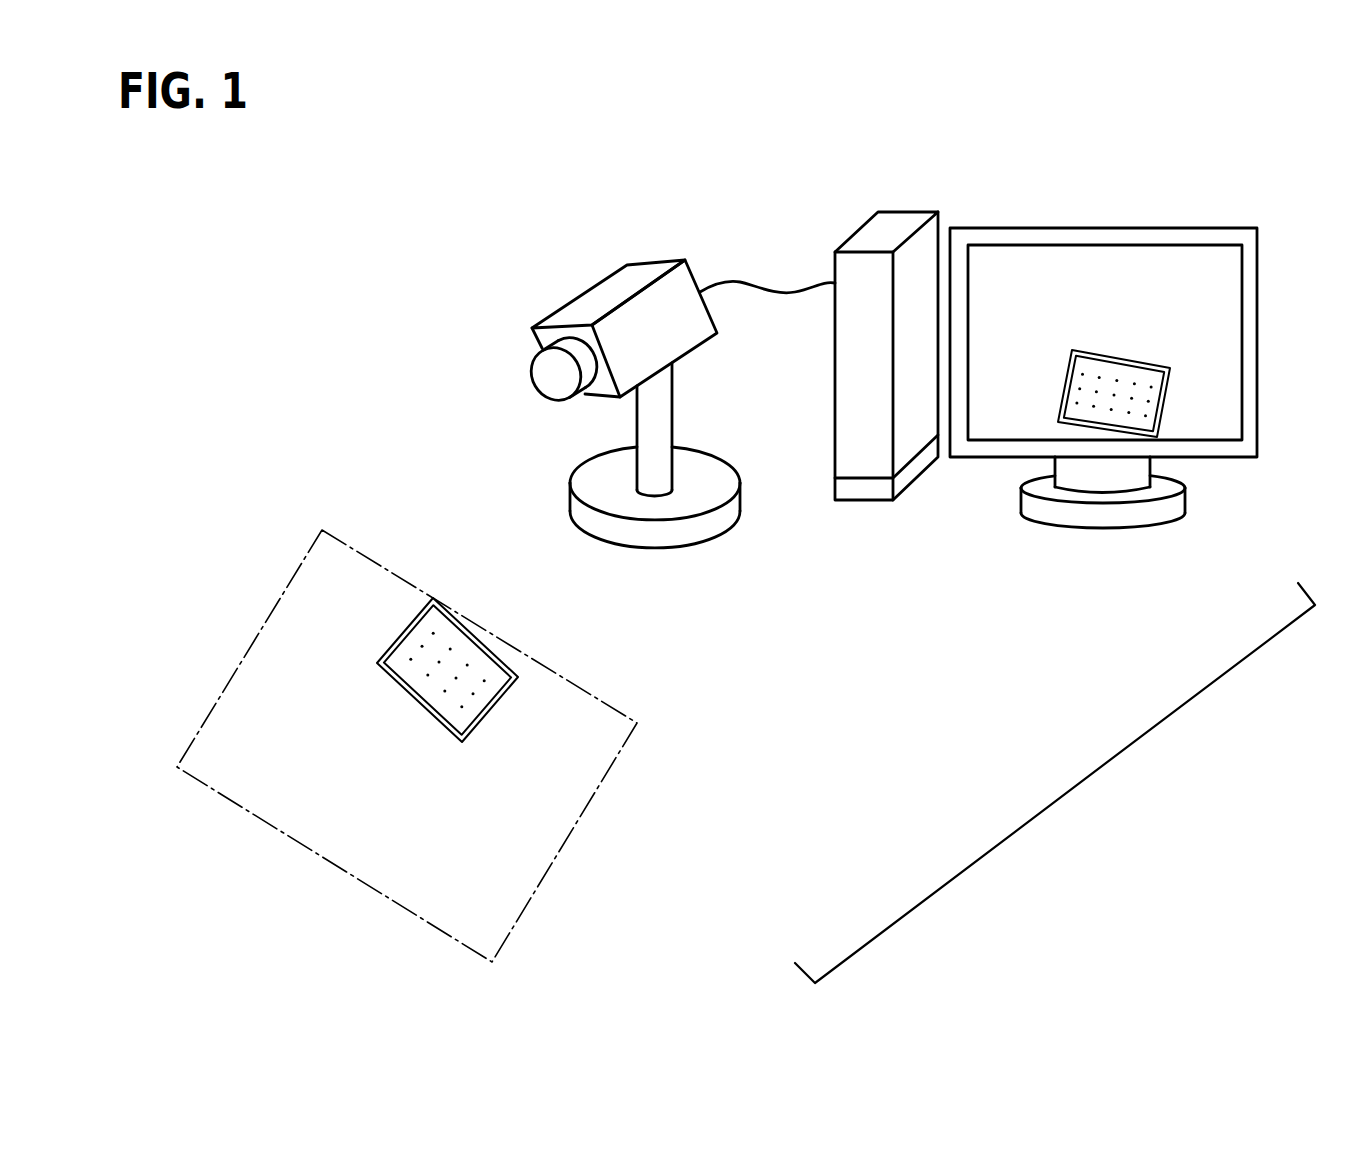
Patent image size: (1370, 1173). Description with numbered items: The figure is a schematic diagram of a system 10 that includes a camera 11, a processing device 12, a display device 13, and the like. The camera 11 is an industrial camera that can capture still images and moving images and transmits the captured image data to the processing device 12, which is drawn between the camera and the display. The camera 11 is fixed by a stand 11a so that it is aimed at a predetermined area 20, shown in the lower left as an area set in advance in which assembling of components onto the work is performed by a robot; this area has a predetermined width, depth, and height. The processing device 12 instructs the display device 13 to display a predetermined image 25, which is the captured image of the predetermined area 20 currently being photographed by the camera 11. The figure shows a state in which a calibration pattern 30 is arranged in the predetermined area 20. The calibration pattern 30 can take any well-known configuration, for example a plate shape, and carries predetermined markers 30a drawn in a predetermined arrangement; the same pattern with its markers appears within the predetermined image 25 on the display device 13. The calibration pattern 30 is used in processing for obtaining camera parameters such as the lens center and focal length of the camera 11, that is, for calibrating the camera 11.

The system 10 is at (1190, 194).
The camera 11 is at (597, 288).
The stand 11a is at (673, 412).
The processing device 12 is at (860, 243).
The display device 13 is at (1240, 228).
The predetermined image 25 is at (1227, 318).
The predetermined area 20 is at (617, 707).
The calibration pattern 30 is at (420, 609).
The predetermined markers 30a is at (460, 658).